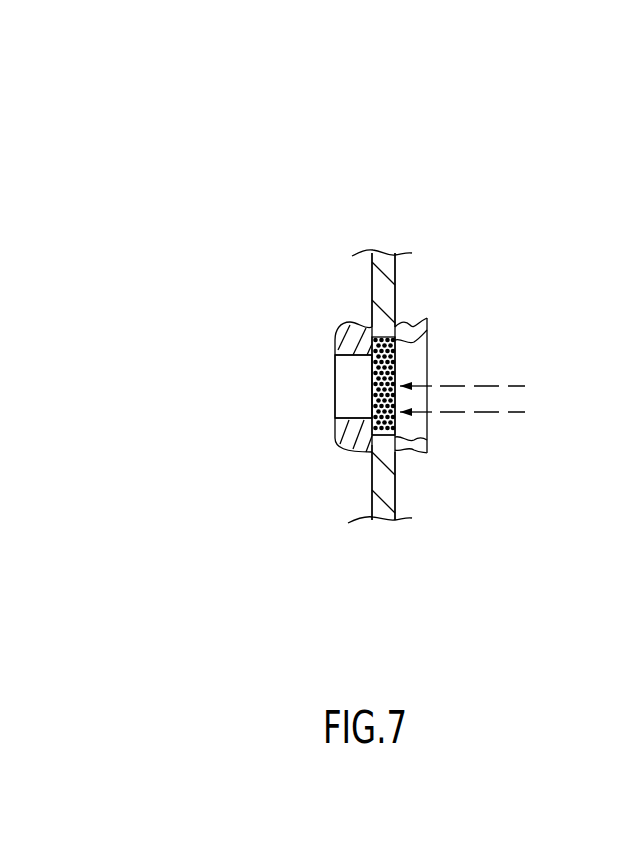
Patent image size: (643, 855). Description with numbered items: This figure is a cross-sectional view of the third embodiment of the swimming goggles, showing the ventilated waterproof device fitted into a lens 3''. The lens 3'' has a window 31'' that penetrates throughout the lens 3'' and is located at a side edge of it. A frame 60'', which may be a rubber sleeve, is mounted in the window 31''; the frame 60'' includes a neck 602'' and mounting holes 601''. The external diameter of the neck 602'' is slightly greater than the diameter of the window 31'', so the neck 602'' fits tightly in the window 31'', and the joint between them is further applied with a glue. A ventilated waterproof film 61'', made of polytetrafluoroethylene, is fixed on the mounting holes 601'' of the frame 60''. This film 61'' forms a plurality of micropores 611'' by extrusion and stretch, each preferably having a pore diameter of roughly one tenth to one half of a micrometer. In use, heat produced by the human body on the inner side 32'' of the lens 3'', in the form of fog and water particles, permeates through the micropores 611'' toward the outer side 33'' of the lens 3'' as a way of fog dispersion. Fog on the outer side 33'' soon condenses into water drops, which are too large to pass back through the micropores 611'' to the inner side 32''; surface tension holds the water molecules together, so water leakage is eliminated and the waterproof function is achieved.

The lens 3'' is at (327, 346).
The window 31'' is at (450, 269).
The inner side of the lens 32'' is at (468, 513).
The outer side of the lens 33'' is at (294, 515).
The frame 60'' is at (298, 357).
The ventilated waterproof film 61'' is at (281, 383).
The micropores 611'' is at (473, 369).
The mounting holes 601'' is at (481, 466).
The neck 602'' is at (260, 475).